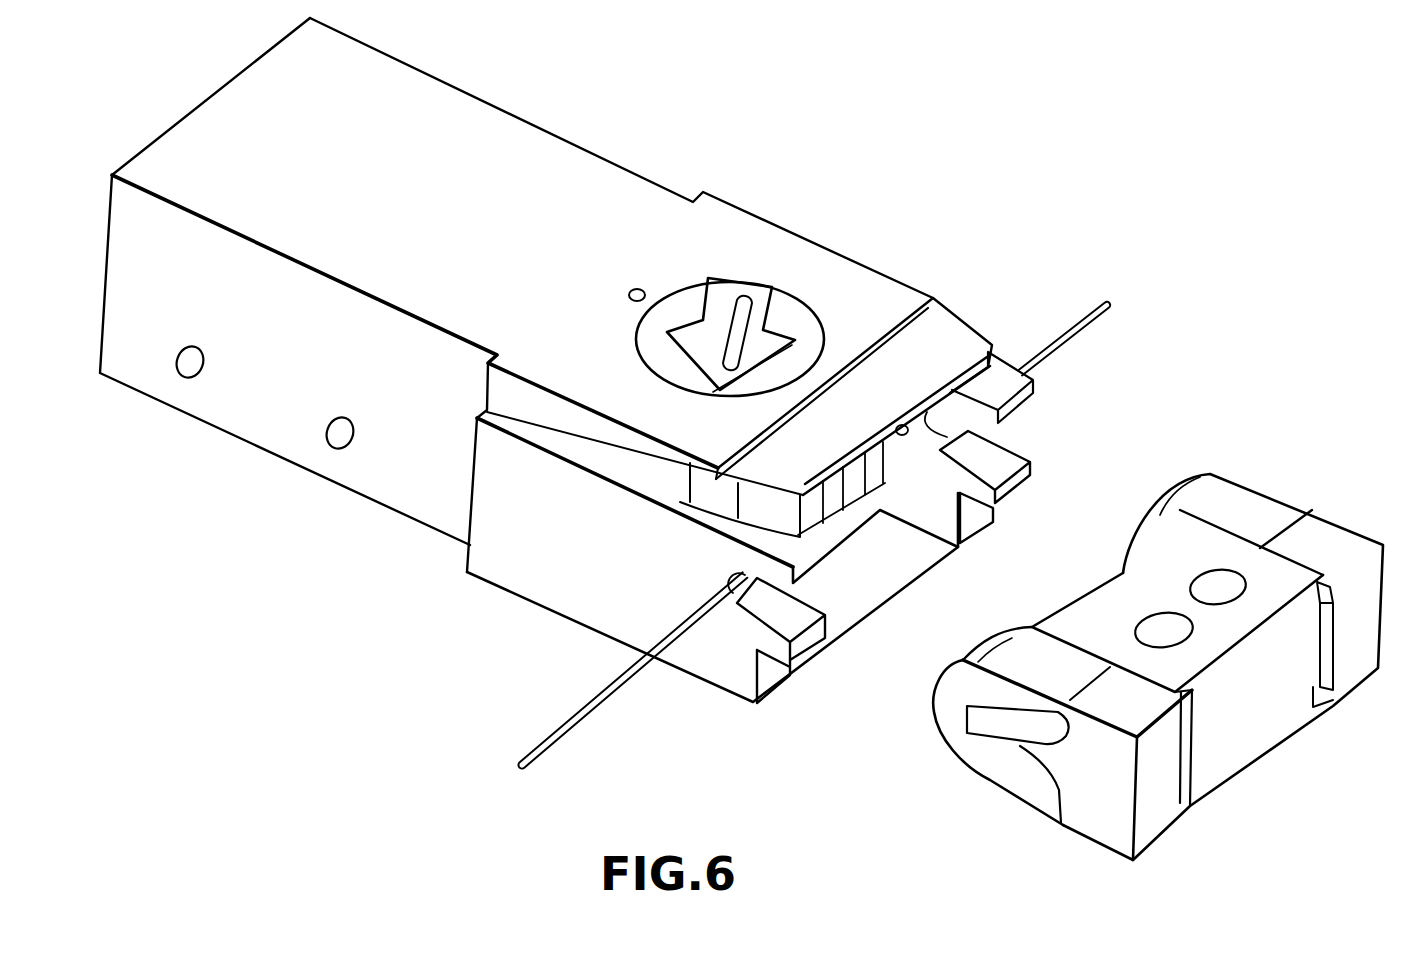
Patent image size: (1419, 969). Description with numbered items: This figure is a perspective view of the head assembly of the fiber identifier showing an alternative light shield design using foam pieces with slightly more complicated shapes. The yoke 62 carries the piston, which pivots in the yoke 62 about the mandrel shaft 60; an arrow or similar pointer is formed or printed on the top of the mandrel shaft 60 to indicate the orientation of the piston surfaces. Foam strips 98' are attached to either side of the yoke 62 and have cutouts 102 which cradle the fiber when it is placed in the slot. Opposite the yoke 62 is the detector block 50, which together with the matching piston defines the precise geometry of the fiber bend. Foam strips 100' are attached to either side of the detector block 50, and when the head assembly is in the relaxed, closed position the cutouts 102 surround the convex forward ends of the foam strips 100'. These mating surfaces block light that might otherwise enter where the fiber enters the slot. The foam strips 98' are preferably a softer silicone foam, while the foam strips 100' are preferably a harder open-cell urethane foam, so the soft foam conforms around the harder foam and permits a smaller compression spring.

The yoke 62 is at (513, 137).
The mandrel shaft 60 is at (783, 310).
The foam strips 98' is at (735, 593).
The cutouts 102 is at (988, 460).
The detector block 50 is at (1240, 742).
The foam strips 100' is at (986, 676).